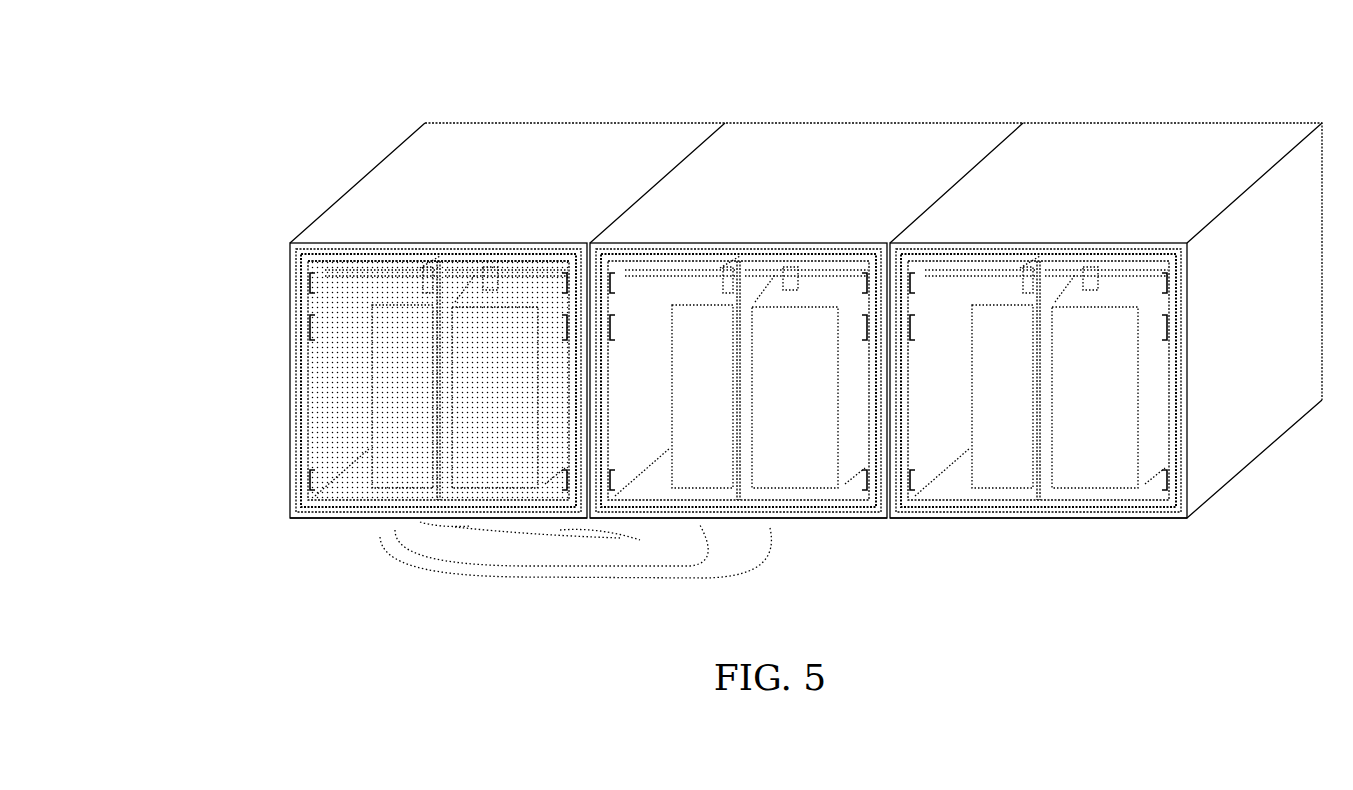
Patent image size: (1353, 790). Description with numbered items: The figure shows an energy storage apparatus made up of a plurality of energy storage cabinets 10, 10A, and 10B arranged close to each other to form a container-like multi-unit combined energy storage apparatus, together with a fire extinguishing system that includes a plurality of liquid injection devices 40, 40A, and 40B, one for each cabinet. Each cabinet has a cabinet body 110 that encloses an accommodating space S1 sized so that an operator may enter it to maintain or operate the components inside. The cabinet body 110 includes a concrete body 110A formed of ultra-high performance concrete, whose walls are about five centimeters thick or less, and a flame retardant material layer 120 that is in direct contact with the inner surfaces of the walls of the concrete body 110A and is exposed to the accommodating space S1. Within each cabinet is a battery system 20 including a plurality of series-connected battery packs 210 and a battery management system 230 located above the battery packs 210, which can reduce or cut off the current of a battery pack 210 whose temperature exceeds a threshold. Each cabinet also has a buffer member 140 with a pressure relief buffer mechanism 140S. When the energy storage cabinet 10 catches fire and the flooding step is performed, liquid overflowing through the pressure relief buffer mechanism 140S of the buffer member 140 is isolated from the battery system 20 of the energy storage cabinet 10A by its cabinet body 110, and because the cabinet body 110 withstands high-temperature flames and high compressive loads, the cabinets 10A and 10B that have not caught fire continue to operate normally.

The energy storage cabinet 10 is at (383, 122).
The energy storage cabinet 10A is at (735, 111).
The energy storage cabinet 10B is at (1033, 111).
The battery system 20 is at (321, 276).
The liquid injection device 40 is at (347, 259).
The liquid injection device 40A is at (703, 258).
The liquid injection device 40B is at (1002, 258).
The cabinet body 110 is at (232, 322).
The concrete body 110A is at (300, 358).
The flame retardant material layer 120 is at (310, 335).
The buffer member 140 is at (357, 513).
The pressure relief buffer mechanism 140S is at (421, 516).
The battery pack 210 is at (385, 400).
The battery management system 230 is at (300, 297).
The accommodating space S1 is at (332, 496).